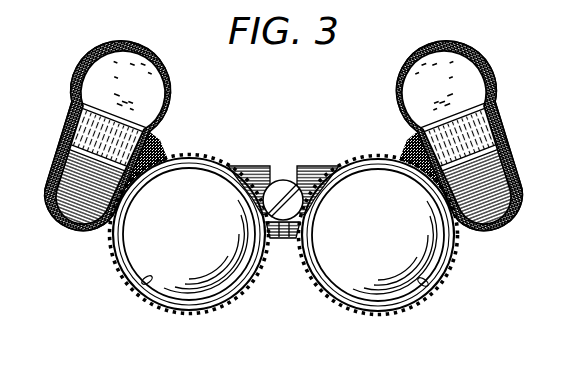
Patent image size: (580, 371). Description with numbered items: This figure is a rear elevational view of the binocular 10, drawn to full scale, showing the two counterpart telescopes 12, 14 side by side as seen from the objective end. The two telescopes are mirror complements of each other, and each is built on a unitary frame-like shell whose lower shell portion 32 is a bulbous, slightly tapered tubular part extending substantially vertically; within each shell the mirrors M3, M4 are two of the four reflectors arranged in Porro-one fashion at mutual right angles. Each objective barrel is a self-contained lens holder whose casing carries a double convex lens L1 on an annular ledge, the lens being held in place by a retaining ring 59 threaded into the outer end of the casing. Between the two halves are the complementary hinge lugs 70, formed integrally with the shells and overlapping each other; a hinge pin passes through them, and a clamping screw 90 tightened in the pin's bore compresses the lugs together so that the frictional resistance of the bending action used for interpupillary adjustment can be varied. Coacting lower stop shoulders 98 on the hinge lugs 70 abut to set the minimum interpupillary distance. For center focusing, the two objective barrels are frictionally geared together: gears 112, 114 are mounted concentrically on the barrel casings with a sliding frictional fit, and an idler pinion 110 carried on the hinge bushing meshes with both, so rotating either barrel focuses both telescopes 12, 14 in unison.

The binocular 10 is at (324, 98).
The telescope 12 is at (110, 40).
The telescope 14 is at (467, 42).
The lower shell portion 32 is at (158, 147).
The hinge lug 70 is at (250, 163).
The lower stop shoulder 98 is at (292, 166).
The clamping screw 90 is at (279, 237).
The idler pinion 110 is at (290, 237).
The gear 112 is at (171, 311).
The gear 114 is at (397, 309).
The retaining ring 59 is at (143, 283).
The double convex lens L1 is at (452, 271).
The mirror M3 is at (520, 205).
The mirror M4 is at (155, 80).